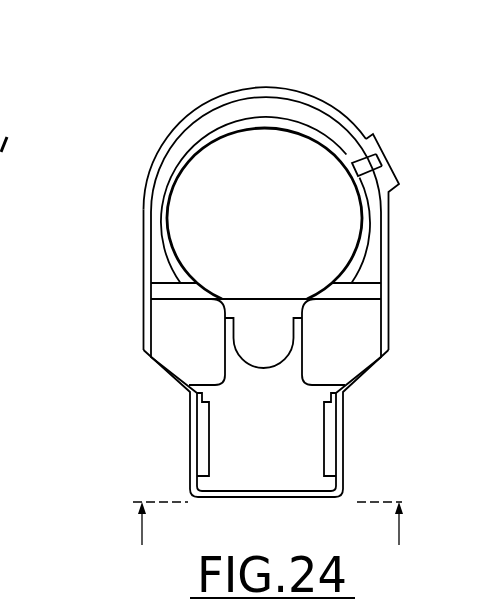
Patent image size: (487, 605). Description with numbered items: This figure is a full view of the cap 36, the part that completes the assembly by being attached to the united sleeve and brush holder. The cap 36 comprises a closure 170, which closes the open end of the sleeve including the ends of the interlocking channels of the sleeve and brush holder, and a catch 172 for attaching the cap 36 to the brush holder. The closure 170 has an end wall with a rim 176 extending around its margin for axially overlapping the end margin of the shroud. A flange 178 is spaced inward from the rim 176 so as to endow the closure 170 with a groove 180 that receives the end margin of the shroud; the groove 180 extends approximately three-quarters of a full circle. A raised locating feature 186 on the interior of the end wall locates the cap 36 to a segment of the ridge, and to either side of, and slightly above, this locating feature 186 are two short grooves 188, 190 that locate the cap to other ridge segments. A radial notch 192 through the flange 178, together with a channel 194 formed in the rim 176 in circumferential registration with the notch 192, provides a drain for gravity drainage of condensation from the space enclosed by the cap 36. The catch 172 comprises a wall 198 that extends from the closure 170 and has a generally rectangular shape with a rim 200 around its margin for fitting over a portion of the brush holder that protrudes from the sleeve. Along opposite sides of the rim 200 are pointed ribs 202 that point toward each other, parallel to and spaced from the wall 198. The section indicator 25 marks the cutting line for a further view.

The cap 36 is at (319, 94).
The closure 170 is at (145, 214).
The catch 172 is at (345, 446).
The rim 176 is at (389, 211).
The flange 178 is at (238, 122).
The groove 180 is at (263, 107).
The raised locating feature 186 is at (249, 362).
The short groove 188 is at (381, 285).
The short groove 190 is at (160, 283).
The radial notch 192 is at (350, 179).
The channel 194 is at (372, 153).
The wall 198 is at (271, 478).
The rim 200 is at (232, 500).
The pointed ribs 202 is at (203, 420).
The section line 25- 25 is at (270, 527).